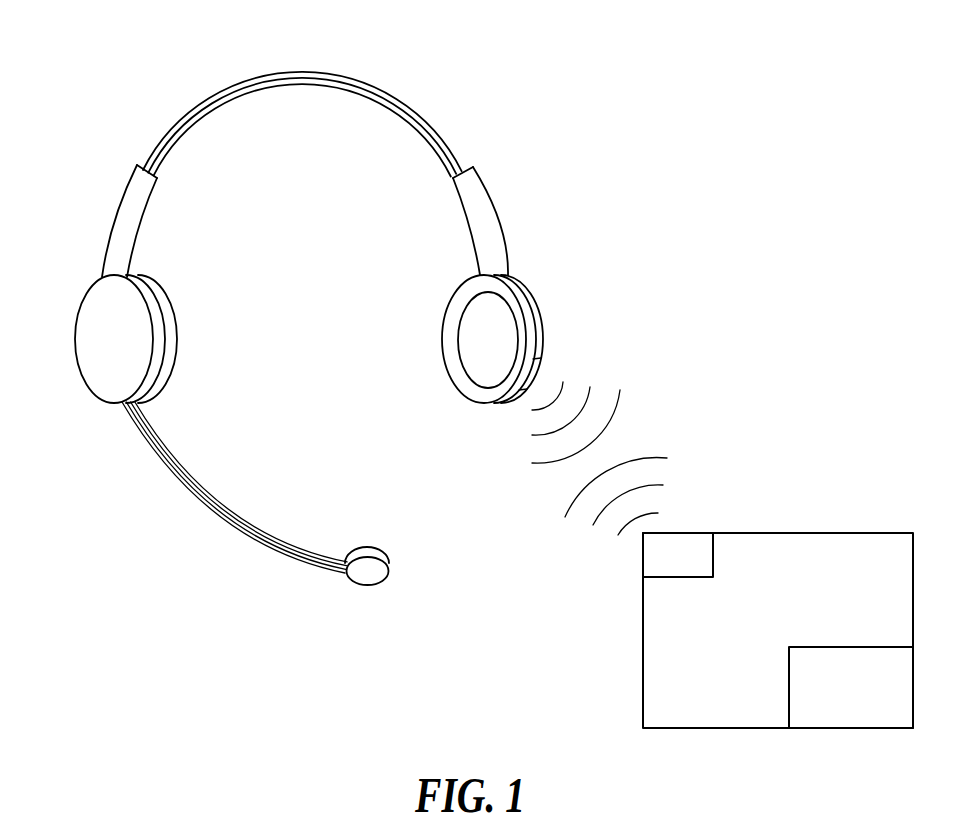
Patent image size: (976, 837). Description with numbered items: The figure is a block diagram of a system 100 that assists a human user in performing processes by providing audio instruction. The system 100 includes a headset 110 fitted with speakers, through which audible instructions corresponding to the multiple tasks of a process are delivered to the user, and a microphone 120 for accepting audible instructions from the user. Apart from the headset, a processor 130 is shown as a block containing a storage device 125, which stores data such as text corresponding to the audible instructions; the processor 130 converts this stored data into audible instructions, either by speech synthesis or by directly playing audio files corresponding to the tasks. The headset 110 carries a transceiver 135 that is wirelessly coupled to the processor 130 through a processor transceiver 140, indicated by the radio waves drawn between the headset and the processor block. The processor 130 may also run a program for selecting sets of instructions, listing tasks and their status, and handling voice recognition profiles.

The system 100 is at (798, 62).
The headset 110 is at (144, 88).
The microphone 120 is at (366, 587).
The storage device 125 is at (850, 647).
The processor 130 is at (779, 532).
The transceiver 135 is at (538, 372).
The processor transceiver 140 is at (643, 556).